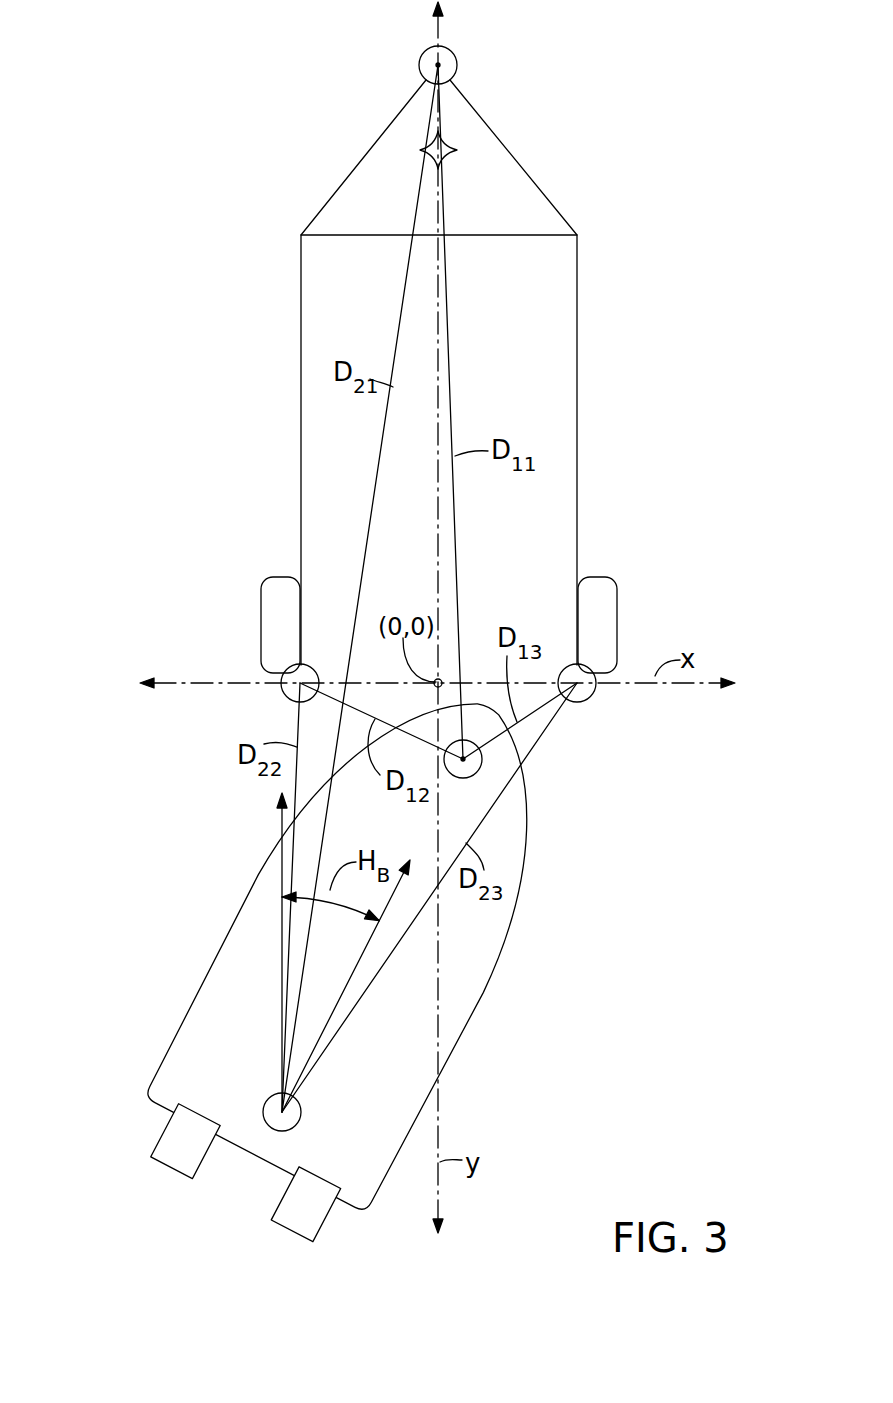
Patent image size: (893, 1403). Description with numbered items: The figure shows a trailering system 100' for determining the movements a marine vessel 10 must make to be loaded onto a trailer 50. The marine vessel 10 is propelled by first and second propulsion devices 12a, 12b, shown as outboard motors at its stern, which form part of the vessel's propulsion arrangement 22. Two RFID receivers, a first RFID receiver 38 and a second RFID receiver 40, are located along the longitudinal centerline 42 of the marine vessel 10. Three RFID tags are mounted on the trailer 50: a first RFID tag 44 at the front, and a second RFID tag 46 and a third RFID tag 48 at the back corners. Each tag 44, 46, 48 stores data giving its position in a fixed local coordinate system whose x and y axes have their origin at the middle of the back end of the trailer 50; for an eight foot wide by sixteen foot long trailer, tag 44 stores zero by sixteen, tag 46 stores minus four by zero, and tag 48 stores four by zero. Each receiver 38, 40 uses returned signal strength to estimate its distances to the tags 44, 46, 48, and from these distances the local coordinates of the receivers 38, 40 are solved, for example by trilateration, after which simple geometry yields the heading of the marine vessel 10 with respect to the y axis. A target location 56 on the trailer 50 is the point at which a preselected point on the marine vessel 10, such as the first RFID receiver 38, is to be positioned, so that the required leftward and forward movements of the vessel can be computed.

The marine vessel 10 is at (213, 953).
The first propulsion device 12a is at (170, 1168).
The second propulsion device 12b is at (292, 1242).
The propulsion system 22 is at (136, 1260).
The first RFID receiver 38 is at (455, 777).
The second RFID receiver 40 is at (297, 1124).
The longitudinal centerline 42 is at (360, 960).
The first RFID tag 44 is at (452, 52).
The second RFID tag 46 is at (317, 670).
The third RFID tag 48 is at (590, 698).
The trailer 50 is at (300, 363).
The target location 56 is at (448, 163).
The trailering system 100' is at (452, 617).